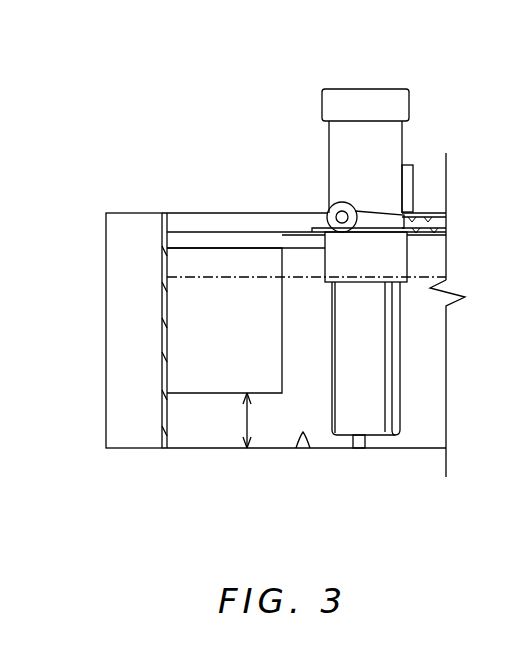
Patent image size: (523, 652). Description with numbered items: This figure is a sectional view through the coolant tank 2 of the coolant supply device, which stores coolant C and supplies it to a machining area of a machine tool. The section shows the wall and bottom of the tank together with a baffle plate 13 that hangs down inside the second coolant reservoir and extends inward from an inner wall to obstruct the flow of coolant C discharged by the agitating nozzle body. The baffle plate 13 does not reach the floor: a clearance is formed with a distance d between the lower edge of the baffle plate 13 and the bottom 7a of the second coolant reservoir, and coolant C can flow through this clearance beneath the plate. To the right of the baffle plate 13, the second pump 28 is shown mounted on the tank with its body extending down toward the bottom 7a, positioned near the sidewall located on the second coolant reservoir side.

The coolant tank 2 is at (106, 323).
The baffle plate 13 is at (225, 262).
The second pump 28 is at (377, 96).
The bottom of the second coolant reservoir 7a is at (307, 444).
The coolant C is at (198, 425).
The distance d is at (237, 420).